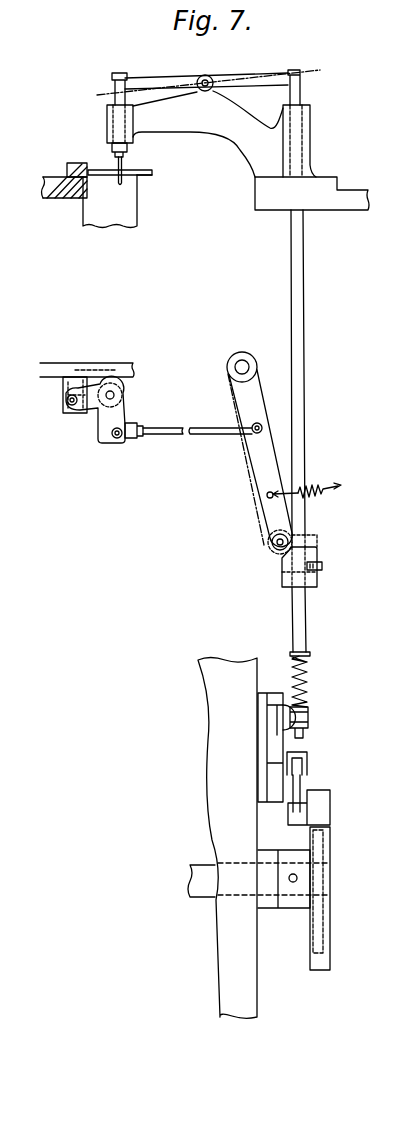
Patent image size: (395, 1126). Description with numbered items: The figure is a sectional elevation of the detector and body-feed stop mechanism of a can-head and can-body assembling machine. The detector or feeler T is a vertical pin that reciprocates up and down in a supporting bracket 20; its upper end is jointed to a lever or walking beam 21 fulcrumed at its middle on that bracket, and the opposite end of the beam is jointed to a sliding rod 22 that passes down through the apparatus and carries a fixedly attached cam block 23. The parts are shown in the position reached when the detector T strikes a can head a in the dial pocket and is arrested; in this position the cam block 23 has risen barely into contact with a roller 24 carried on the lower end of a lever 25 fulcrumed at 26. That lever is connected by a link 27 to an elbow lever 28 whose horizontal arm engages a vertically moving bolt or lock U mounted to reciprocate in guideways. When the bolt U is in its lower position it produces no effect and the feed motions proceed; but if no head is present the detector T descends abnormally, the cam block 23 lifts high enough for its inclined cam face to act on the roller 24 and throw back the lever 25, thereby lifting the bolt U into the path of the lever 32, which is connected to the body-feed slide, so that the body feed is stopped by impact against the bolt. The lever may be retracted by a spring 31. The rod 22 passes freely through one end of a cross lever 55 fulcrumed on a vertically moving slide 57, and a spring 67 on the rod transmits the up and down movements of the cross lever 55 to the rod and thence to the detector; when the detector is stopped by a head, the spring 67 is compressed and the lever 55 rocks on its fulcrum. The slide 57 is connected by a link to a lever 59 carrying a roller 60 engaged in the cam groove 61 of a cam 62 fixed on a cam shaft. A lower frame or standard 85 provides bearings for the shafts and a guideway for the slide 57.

The supporting bracket 20 is at (238, 141).
The lever or walking beam 21 is at (186, 77).
The sliding rod 22 is at (303, 98).
The detector or feeler T is at (123, 157).
The can head a is at (145, 175).
The lever 32 is at (112, 368).
The bolt or lock U is at (80, 382).
The elbow lever 28 is at (120, 410).
The link 27 is at (173, 433).
The fulcrum 26 is at (246, 353).
The lever 25 is at (260, 477).
The spring 31 is at (320, 489).
The roller 24 is at (270, 550).
The cam block 23 is at (317, 555).
The spring 67 is at (307, 682).
The cross lever 55 is at (308, 718).
The vertically moving slide 57 is at (275, 722).
The lever 59 is at (302, 782).
The roller 60 is at (317, 810).
The cam groove 61 is at (320, 855).
The cam 62 is at (330, 920).
The lower frame or standard 85 is at (227, 838).